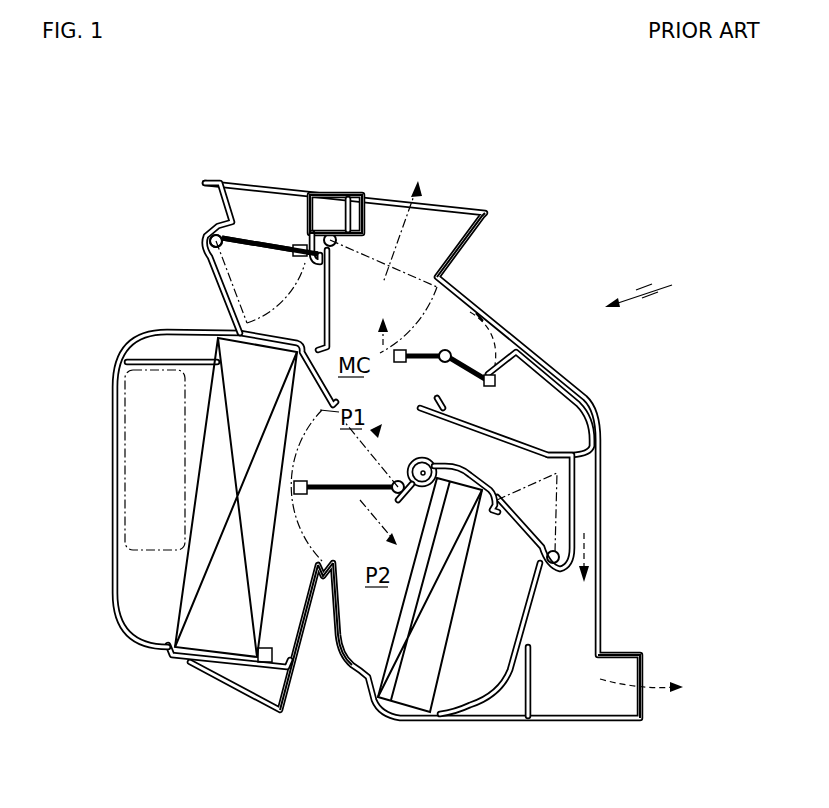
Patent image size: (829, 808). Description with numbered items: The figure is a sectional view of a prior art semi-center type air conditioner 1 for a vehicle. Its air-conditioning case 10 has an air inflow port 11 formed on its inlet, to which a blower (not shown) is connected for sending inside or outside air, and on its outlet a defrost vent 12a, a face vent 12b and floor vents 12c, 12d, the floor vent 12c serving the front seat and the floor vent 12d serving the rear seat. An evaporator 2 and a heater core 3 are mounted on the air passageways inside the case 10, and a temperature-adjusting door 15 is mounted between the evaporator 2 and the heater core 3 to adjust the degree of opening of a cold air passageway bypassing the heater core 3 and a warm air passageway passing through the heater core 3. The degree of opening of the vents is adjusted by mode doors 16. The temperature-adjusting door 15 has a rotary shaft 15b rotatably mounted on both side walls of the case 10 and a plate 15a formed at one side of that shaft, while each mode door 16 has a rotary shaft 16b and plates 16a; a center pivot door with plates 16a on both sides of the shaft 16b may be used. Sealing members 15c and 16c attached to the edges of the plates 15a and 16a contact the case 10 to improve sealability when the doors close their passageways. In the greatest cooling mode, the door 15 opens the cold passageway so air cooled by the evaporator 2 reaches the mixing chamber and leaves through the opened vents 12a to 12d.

The air conditioner 1 is at (647, 286).
The evaporator 2 is at (223, 643).
The heater core 3 is at (398, 703).
The air-conditioning case 10 is at (606, 490).
The air inflow port 11 is at (160, 547).
The defrost vent 12a is at (267, 190).
The face vent 12b is at (437, 200).
The floor vent for a front seat 12c is at (577, 448).
The floor vent for a rear seat 12d is at (617, 663).
The temperature-adjusting door 15 is at (351, 752).
The plate 15a is at (313, 540).
The rotary shaft 15b is at (352, 540).
The sealing member 15c is at (330, 478).
The mode door 16 is at (527, 307).
The plate 16a is at (270, 246).
The rotary shaft 16b is at (216, 241).
The sealing member 16c is at (297, 232).